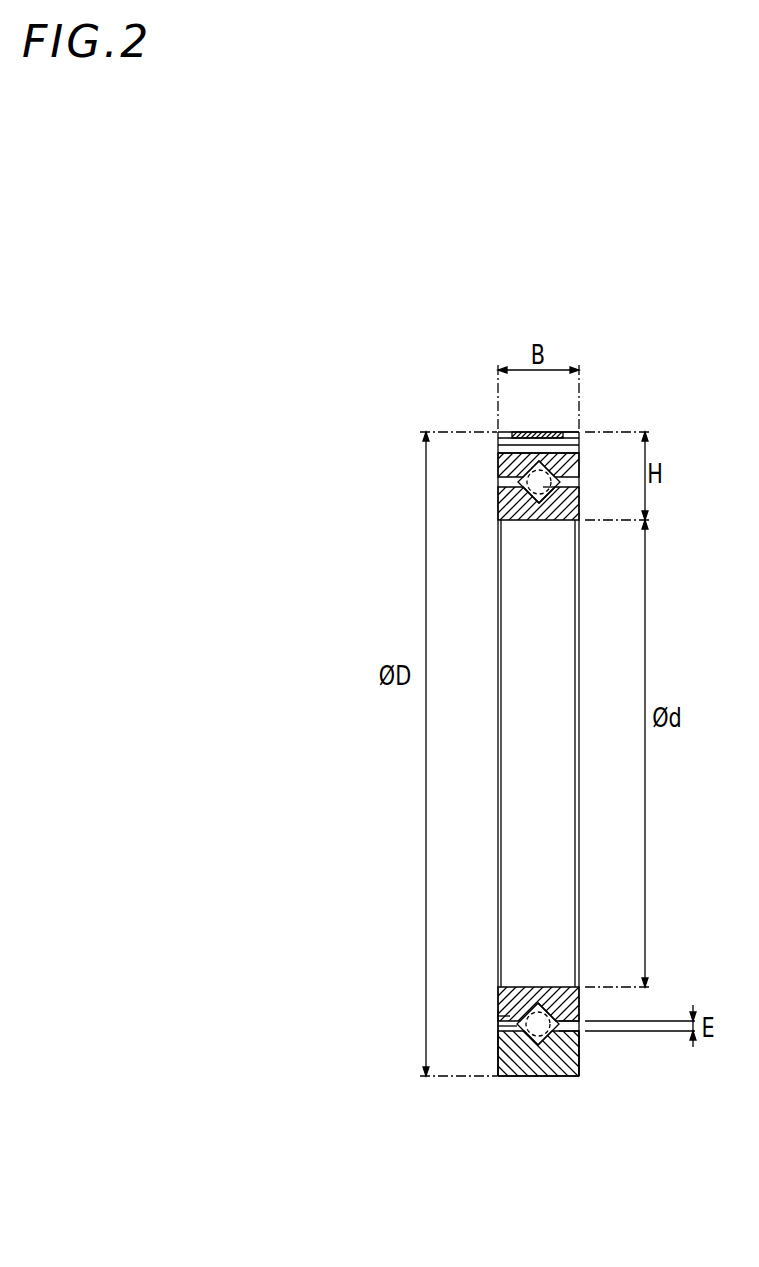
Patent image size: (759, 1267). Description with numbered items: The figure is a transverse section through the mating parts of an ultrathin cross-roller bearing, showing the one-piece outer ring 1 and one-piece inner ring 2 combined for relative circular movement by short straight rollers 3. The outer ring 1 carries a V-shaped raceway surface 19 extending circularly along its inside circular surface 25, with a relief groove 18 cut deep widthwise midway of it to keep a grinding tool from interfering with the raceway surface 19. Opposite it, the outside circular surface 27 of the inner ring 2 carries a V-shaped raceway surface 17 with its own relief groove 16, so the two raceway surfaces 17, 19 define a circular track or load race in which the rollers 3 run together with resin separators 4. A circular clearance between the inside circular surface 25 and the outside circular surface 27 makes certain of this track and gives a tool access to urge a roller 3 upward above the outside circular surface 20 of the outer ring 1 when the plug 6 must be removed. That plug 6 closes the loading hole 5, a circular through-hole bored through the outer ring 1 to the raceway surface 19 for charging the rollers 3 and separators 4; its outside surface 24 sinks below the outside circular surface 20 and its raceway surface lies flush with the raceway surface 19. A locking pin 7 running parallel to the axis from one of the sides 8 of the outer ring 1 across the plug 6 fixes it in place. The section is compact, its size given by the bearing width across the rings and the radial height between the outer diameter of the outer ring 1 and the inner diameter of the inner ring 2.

The outer ring 1 is at (579, 458).
The inner ring 2 is at (500, 503).
The roller 3 is at (500, 483).
The separator 4 is at (617, 1033).
The loading hole 5 is at (548, 488).
The plug 6 is at (583, 433).
The locking pin 7 is at (500, 445).
The side 8 is at (498, 1053).
The relief groove 16 is at (537, 997).
The raceway surface 17 is at (535, 503).
The relief groove 18 is at (545, 1047).
The raceway surface 19 is at (543, 503).
The outside circular surface 20 is at (555, 432).
The outside surface 24 is at (527, 432).
The inside circular surface 25 is at (500, 1027).
The outside circular surface 27 is at (500, 1017).